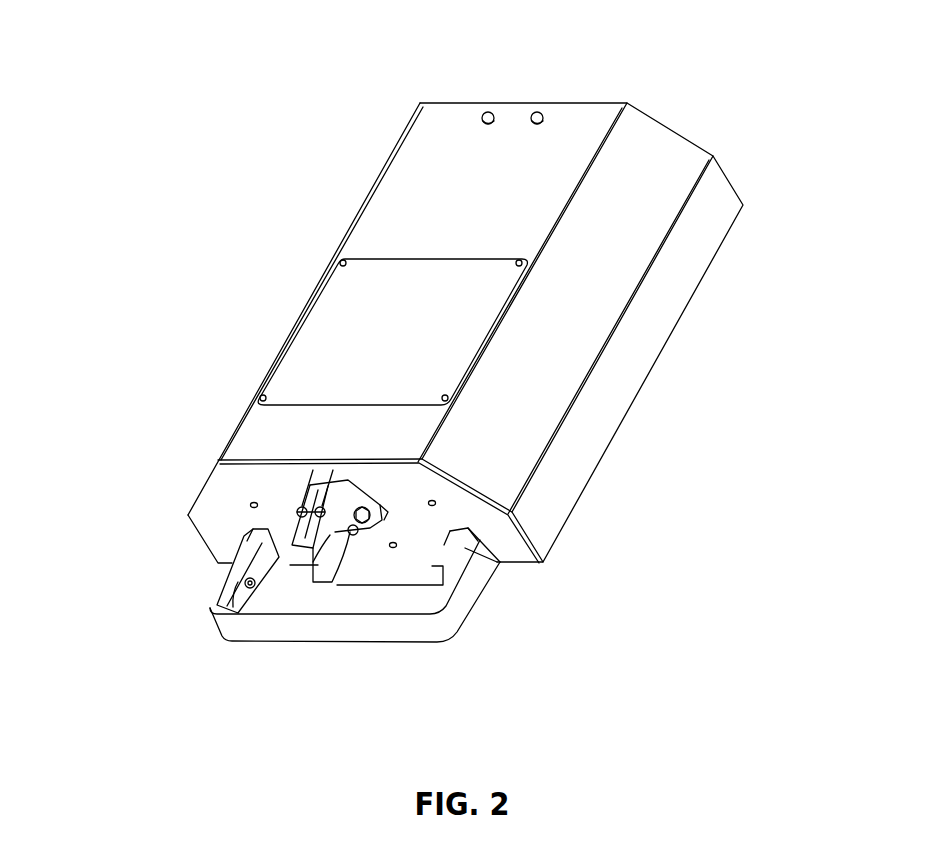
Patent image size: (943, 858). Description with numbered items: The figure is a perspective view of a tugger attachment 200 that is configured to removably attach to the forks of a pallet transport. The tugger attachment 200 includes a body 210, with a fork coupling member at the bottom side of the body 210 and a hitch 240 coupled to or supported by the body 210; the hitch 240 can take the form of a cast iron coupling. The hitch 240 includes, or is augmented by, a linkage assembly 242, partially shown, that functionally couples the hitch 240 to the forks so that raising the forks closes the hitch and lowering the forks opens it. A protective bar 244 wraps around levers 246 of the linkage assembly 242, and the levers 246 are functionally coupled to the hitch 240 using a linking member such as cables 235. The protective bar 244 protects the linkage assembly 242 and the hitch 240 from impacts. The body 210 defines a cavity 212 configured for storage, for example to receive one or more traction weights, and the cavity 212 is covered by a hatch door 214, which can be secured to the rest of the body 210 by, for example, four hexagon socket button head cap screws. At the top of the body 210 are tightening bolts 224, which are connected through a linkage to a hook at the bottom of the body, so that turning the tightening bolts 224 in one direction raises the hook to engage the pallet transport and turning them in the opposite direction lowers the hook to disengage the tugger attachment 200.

The tugger attachment 200 is at (762, 105).
The body 210 is at (465, 340).
The cavity 212 is at (308, 312).
The hatch door 214 is at (263, 398).
The tightening bolts 224 is at (497, 107).
The cables 235 is at (297, 485).
The hitch 240 is at (213, 505).
The linkage assembly 242 is at (286, 578).
The protective bar 244 is at (303, 631).
The levers 246 is at (228, 563).